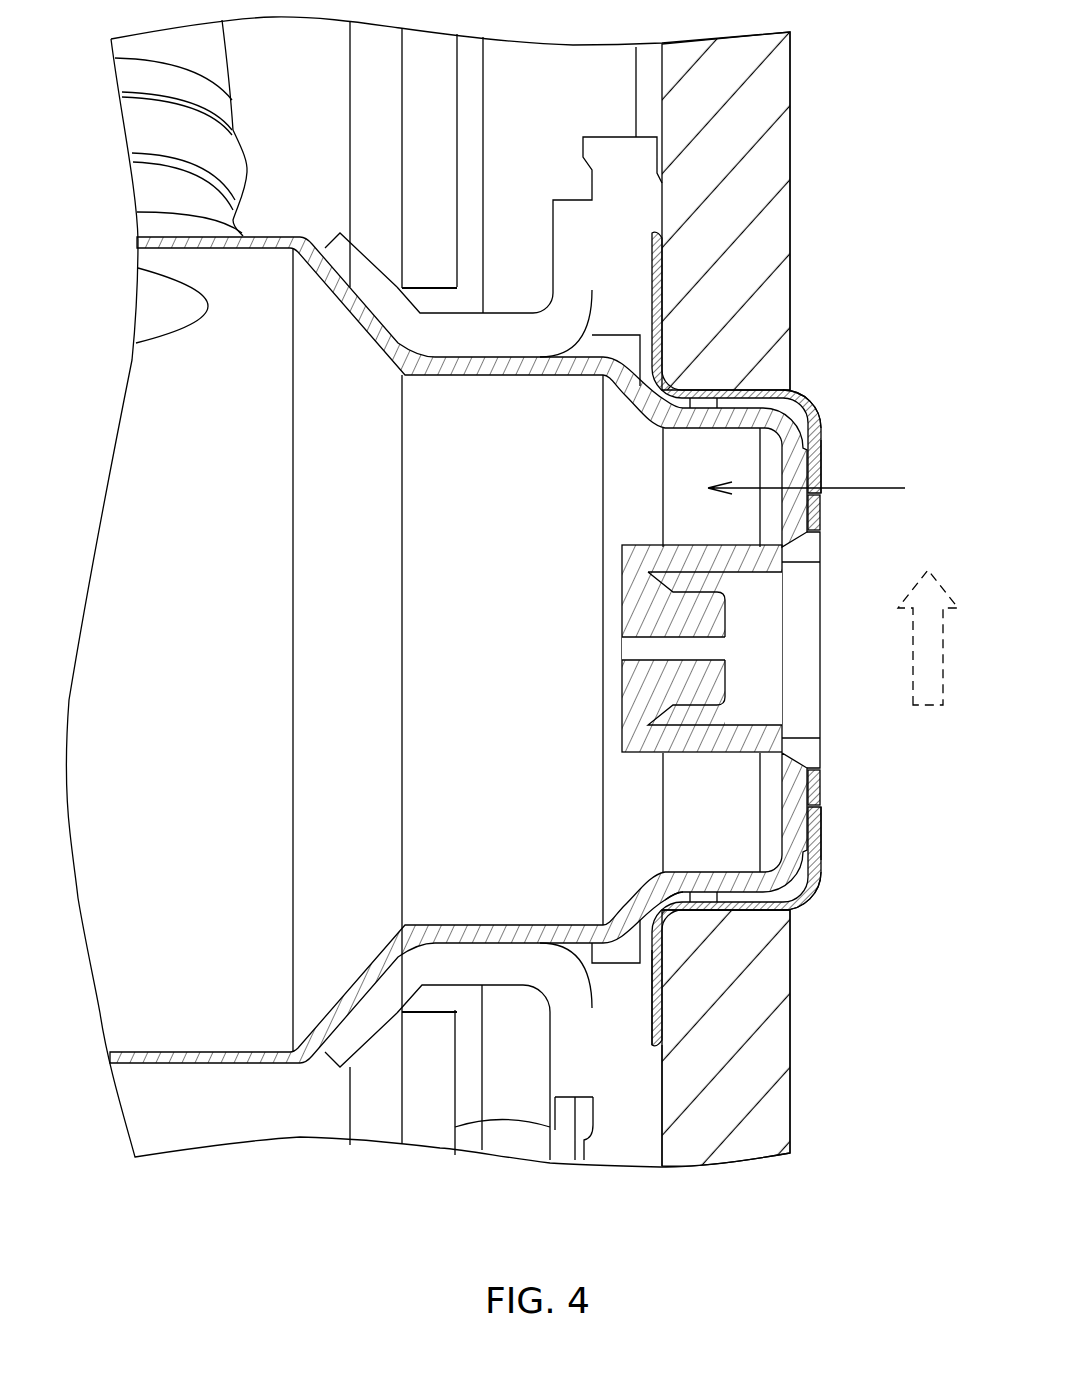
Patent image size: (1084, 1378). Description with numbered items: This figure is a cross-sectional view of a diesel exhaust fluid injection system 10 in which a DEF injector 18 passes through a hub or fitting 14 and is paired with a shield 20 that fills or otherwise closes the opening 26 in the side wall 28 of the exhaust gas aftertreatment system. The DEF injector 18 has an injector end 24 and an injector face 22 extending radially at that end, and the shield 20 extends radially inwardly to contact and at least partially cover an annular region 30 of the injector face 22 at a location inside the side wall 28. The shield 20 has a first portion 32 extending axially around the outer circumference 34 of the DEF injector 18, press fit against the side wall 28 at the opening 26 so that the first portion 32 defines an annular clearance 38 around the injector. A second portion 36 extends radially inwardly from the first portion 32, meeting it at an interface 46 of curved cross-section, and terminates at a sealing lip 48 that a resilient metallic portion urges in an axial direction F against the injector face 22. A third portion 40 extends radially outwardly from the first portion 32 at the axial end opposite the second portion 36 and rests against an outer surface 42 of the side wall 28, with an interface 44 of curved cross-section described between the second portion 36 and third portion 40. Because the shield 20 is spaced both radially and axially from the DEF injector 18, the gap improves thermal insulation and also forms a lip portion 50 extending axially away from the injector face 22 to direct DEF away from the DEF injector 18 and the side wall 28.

The diesel exhaust fluid injection system 10 is at (886, 108).
The hub / fitting 14 is at (913, 665).
The DEF injector 18 is at (149, 593).
The shield 20 is at (747, 393).
The injector face 22 is at (821, 518).
The injector end 24 is at (793, 440).
The opening 26 is at (733, 913).
The side wall 28 is at (773, 1013).
The annular region 30 is at (813, 793).
The first portion 32 is at (703, 913).
The outer circumference 34 is at (717, 390).
The second portion 36 is at (820, 852).
The annular clearance 38 is at (721, 895).
The third portion 40 is at (653, 987).
The outer surface 42 is at (657, 1050).
The interface 44 is at (667, 907).
The interface 46 is at (803, 399).
The sealing lip 48 is at (818, 478).
The lip portion 50 is at (810, 902).
The axial direction F is at (884, 488).